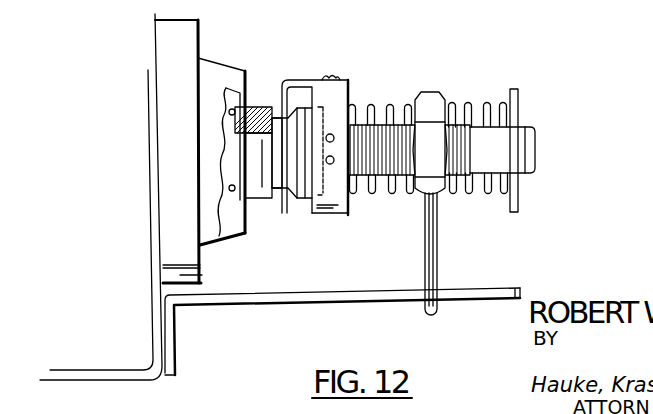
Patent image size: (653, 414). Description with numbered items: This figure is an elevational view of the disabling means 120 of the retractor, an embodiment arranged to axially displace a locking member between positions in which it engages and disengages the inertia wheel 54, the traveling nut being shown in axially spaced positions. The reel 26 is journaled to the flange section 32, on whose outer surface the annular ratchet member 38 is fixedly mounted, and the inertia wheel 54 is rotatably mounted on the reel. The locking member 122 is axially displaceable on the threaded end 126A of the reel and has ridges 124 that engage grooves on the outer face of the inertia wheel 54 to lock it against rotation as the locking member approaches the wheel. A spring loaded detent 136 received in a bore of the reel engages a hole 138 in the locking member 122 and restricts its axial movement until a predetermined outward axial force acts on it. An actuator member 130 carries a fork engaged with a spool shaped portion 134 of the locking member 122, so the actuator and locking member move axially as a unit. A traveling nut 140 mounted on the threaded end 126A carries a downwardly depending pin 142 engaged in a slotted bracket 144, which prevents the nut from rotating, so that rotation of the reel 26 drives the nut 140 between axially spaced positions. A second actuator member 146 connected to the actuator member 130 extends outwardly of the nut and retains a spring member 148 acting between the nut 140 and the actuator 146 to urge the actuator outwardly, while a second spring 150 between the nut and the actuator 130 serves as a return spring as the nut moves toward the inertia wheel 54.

The flange section 32 is at (148, 103).
The annular ratchet member 38 is at (175, 26).
The reel 26 is at (255, 178).
The inertia wheel 54 is at (225, 235).
The locking member 122 is at (262, 190).
The ridges 124 is at (257, 107).
The hole 138 is at (268, 120).
The spring loaded detent 136 is at (330, 98).
The spool shaped portion 134 is at (298, 200).
The actuator member 130 is at (348, 88).
The second spring 150 is at (368, 197).
The traveling nut 140 is at (440, 92).
The spring member 148 is at (480, 195).
The second actuator member 146 is at (518, 90).
The threaded end 126A is at (538, 141).
The pin 142 is at (430, 287).
The slotted bracket 144 is at (487, 297).
The disabling means 120 is at (480, 62).